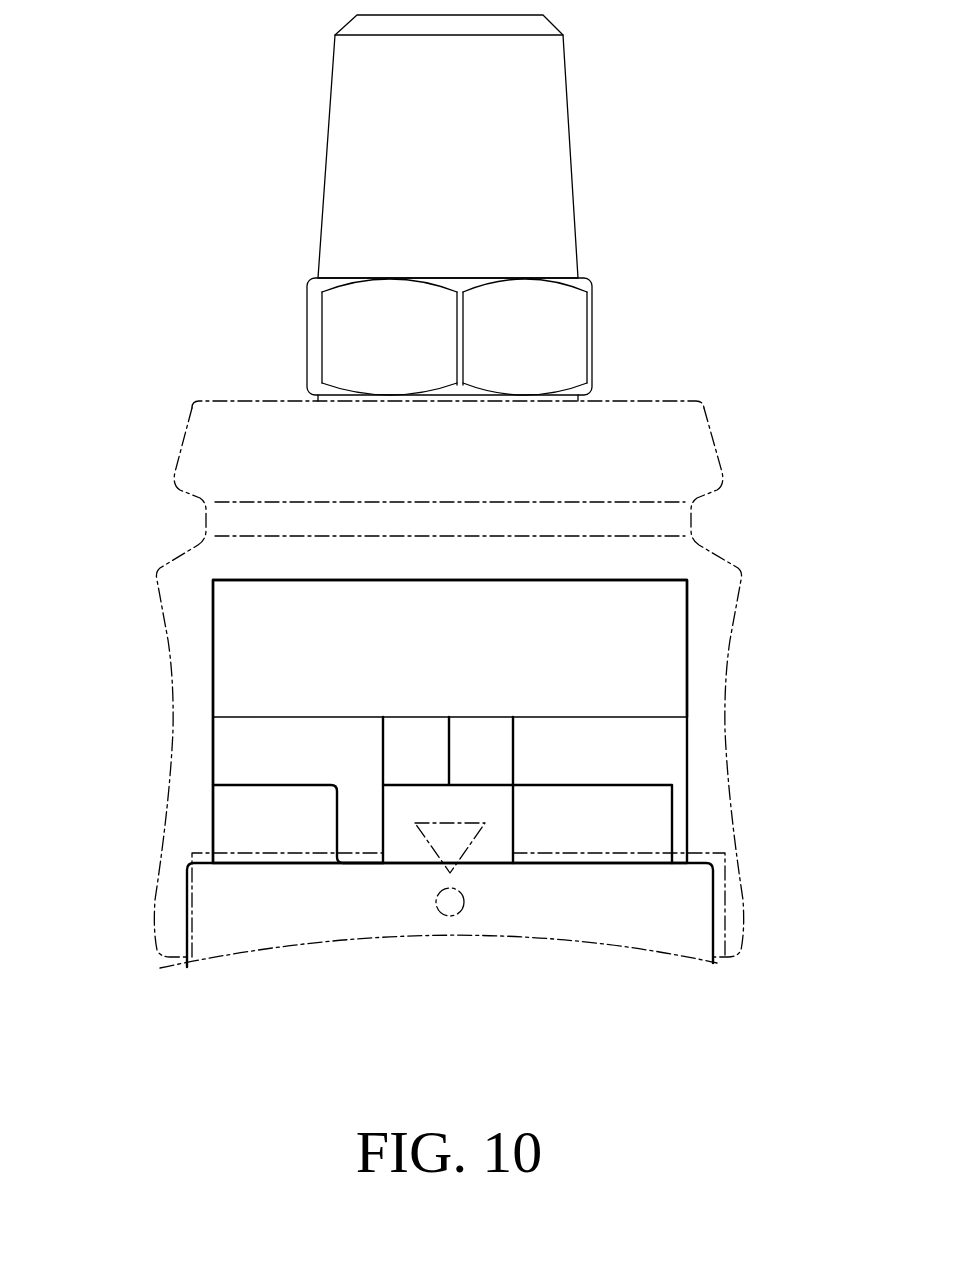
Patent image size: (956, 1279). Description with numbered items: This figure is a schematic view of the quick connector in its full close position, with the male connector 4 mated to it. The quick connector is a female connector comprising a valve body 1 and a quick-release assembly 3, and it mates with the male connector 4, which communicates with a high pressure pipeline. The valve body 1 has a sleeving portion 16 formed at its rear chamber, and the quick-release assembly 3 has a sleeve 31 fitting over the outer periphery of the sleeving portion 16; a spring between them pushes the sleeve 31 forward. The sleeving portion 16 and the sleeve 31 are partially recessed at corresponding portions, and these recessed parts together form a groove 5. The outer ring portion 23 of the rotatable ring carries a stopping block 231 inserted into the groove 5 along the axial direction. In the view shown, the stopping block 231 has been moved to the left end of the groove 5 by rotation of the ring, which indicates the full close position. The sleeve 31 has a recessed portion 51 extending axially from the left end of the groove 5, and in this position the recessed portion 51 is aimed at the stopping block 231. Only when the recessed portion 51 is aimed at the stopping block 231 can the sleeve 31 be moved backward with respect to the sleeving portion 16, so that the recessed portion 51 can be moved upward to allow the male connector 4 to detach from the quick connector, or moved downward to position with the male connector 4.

The valve body 1 is at (688, 762).
The quick-release assembly 3 is at (747, 670).
The male connector 4 is at (547, 252).
The groove 5 is at (657, 825).
The sleeving portion 16 is at (213, 662).
The outer ring portion 23 is at (688, 907).
The sleeve 31 is at (723, 722).
The recessed portion 51 is at (393, 746).
The stopping block 231 is at (497, 847).